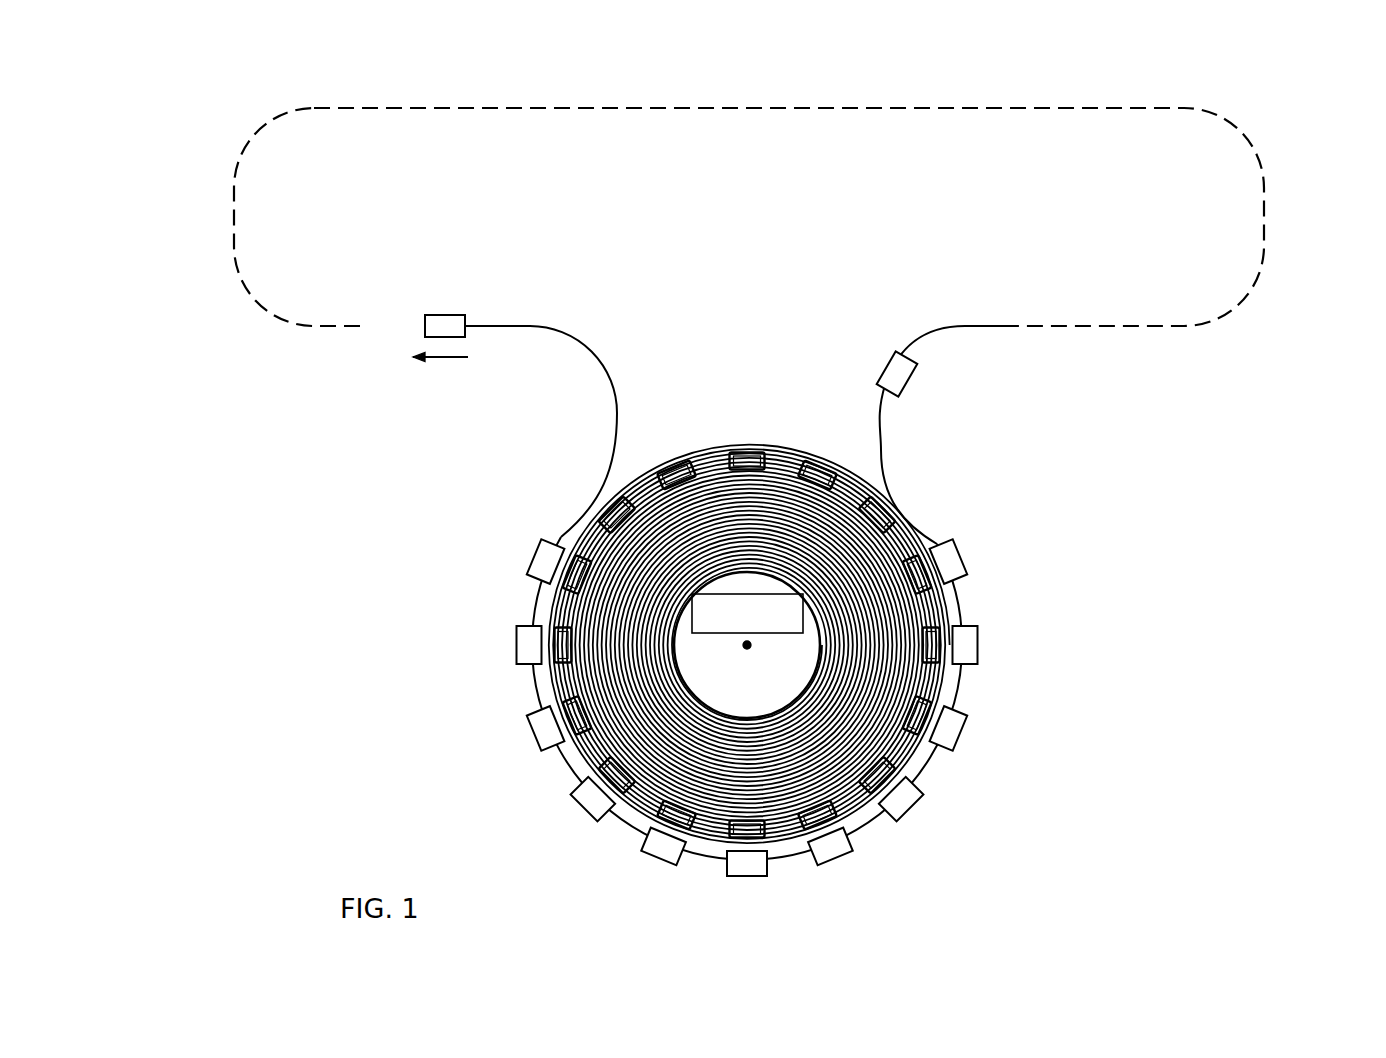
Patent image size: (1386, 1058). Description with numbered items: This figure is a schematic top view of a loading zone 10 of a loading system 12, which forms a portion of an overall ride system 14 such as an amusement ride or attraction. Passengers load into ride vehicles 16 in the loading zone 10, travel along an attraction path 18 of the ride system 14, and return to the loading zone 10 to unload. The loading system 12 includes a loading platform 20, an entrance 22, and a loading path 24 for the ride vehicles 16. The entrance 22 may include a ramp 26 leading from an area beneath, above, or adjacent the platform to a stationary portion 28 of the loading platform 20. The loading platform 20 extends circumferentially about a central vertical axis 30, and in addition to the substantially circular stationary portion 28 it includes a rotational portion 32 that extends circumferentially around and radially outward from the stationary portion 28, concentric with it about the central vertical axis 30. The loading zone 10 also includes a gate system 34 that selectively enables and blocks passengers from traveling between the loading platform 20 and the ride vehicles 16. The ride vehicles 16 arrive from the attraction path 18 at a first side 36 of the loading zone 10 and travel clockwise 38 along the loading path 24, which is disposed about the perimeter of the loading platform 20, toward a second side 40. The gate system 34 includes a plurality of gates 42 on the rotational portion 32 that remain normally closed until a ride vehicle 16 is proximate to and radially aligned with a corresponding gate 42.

The loading zone 10 is at (1270, 367).
The loading system 12 is at (1290, 419).
The ride system 14 is at (1285, 87).
The ride vehicles 16 is at (447, 315).
The attraction path 18 is at (748, 107).
The loading platform 20 is at (952, 600).
The entrance 22 is at (775, 493).
The loading path 24 is at (932, 765).
The ramp 26 is at (742, 618).
The stationary portion 28 is at (762, 695).
The central vertical axis 30 is at (742, 647).
The rotational portion 32 is at (762, 792).
The gate system 34 is at (811, 693).
The first side 36 is at (1161, 518).
The clockwise 38 is at (760, 706).
The second side 40 is at (423, 652).
The gates 42 is at (562, 625).